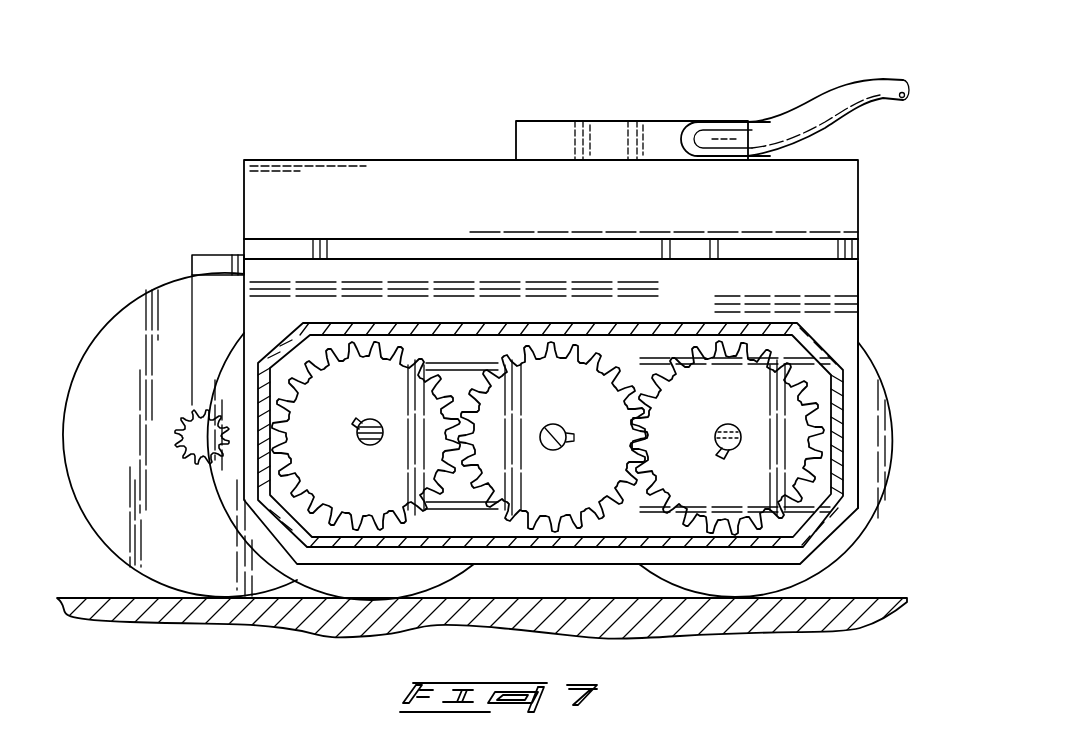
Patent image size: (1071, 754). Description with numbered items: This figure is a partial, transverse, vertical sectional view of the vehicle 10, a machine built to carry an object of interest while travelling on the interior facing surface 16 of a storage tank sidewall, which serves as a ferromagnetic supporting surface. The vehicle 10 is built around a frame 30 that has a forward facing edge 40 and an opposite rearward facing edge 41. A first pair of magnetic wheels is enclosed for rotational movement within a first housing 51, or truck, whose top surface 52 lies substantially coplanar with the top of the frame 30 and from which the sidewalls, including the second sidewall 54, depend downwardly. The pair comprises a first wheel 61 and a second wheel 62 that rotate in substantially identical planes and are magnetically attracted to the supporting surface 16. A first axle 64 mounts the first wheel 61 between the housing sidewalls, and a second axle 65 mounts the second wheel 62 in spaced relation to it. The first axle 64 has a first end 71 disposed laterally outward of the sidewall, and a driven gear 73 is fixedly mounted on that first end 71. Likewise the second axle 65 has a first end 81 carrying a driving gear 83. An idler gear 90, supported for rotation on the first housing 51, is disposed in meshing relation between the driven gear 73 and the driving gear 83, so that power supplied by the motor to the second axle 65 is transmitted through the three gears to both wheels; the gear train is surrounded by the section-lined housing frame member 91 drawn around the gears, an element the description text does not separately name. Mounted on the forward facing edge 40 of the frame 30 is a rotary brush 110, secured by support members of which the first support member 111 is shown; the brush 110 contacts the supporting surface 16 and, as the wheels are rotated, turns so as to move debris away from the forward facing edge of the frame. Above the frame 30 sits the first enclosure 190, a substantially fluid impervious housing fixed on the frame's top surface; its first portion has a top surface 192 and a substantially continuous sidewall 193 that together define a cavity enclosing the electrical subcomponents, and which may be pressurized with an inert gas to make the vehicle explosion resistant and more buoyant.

The vehicle 10 is at (309, 82).
The interior facing surface 16 is at (850, 600).
The frame 30 is at (206, 250).
The forward facing edge 40 is at (192, 265).
The rearward facing edge 41 is at (860, 262).
The first housing 51 is at (858, 290).
The top surface 52 is at (374, 247).
The second sidewall 54 is at (673, 312).
The first wheel 61 is at (870, 375).
The second wheel 62 is at (243, 512).
The first axle 64 is at (378, 424).
The second axle 65 is at (733, 425).
The first end 71 is at (355, 436).
The driven gear 73 is at (350, 492).
The first end 81 is at (736, 450).
The driving gear 83 is at (668, 450).
The idler gear 90 is at (546, 409).
The gear housing frame 91 is at (346, 323).
The rotary brush 110 is at (96, 286).
The first support member 111 is at (205, 353).
The first enclosure 190 is at (348, 200).
The top surface 192 is at (438, 157).
The continuous sidewall 193 is at (815, 192).